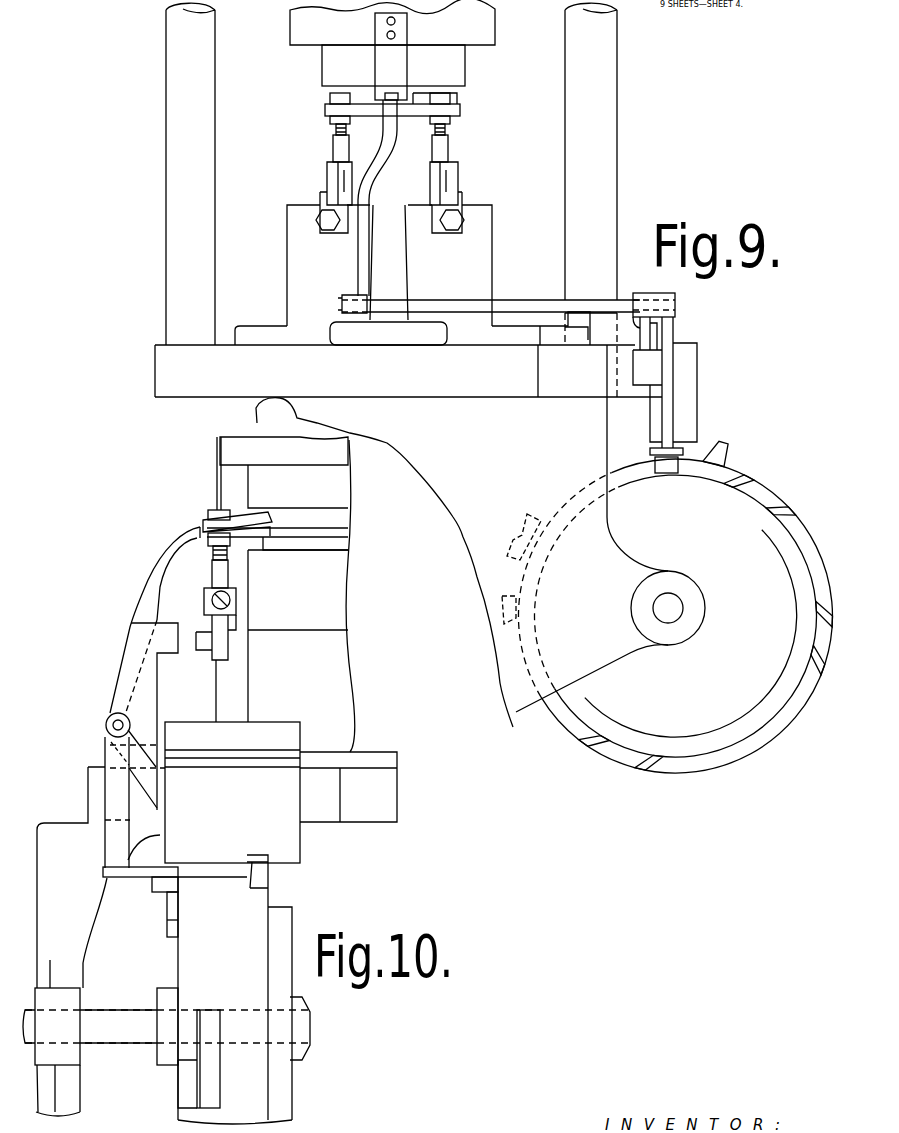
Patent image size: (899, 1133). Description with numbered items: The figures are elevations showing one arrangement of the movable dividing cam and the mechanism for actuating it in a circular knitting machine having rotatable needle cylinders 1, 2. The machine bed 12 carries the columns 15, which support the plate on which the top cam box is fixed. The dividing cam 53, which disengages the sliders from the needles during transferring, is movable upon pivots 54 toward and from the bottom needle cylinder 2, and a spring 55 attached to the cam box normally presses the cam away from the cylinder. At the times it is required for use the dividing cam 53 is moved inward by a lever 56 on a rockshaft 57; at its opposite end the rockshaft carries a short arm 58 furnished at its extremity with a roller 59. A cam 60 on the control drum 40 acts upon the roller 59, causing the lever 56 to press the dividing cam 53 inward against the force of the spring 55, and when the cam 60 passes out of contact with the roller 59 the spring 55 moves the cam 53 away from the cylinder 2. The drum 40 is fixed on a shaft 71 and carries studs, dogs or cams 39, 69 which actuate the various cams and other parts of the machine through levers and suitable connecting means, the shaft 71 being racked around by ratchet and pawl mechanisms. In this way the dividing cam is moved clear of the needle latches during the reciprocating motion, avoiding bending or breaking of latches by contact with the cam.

In FIG. 9, the top needle cylinder 1 is at (392, 43).
In FIG. 10, the top needle cylinder 1 is at (284, 472).
In FIG. 9, the bottom needle cylinder 2 is at (412, 256).
In FIG. 10, the bottom needle cylinder 2 is at (298, 636).
In FIG. 9, the machine bed 12 is at (408, 355).
In FIG. 10, the machine bed 12 is at (88, 795).
In FIG. 9, the columns 15 is at (391, 200).
In FIG. 9, the cam on drum 39 is at (798, 522).
In FIG. 10, the cam on drum 39 is at (280, 1085).
In FIG. 9, the control drum 40 is at (675, 616).
In FIG. 10, the control drum 40 is at (281, 923).
In FIG. 9, the dividing cam 53 is at (380, 118).
In FIG. 10, the dividing cam 53 is at (207, 526).
In FIG. 9, the pivots 54 is at (326, 180).
In FIG. 10, the pivots 54 is at (232, 600).
In FIG. 9, the spring 55 is at (391, 56).
In FIG. 10, the spring 55 is at (216, 485).
In FIG. 9, the lever 56 is at (358, 268).
In FIG. 10, the lever 56 is at (148, 588).
In FIG. 9, the rockshaft 57 is at (518, 304).
In FIG. 10, the rockshaft 57 is at (106, 725).
In FIG. 9, the short arm 58 is at (668, 382).
In FIG. 10, the short arm 58 is at (115, 848).
In FIG. 9, the roller 59 is at (663, 473).
In FIG. 10, the roller 59 is at (160, 880).
In FIG. 9, the cam on drum 60 is at (749, 490).
In FIG. 10, the cam on drum 60 is at (172, 918).
In FIG. 9, the cams on drum 69 is at (690, 458).
In FIG. 10, the cams on drum 69 is at (200, 1098).
In FIG. 9, the shaft 71 is at (672, 600).
In FIG. 10, the shaft 71 is at (166, 1026).